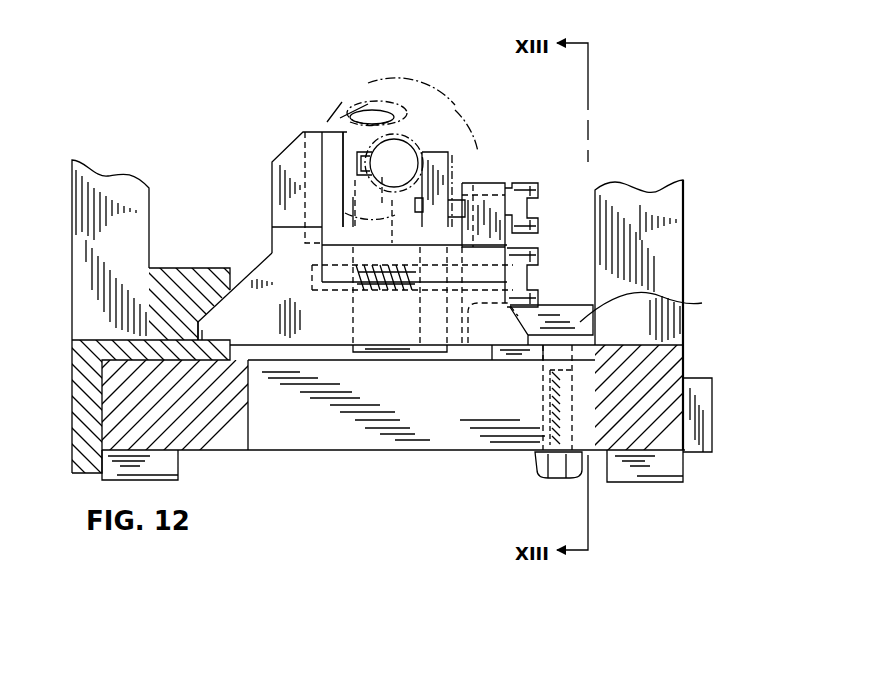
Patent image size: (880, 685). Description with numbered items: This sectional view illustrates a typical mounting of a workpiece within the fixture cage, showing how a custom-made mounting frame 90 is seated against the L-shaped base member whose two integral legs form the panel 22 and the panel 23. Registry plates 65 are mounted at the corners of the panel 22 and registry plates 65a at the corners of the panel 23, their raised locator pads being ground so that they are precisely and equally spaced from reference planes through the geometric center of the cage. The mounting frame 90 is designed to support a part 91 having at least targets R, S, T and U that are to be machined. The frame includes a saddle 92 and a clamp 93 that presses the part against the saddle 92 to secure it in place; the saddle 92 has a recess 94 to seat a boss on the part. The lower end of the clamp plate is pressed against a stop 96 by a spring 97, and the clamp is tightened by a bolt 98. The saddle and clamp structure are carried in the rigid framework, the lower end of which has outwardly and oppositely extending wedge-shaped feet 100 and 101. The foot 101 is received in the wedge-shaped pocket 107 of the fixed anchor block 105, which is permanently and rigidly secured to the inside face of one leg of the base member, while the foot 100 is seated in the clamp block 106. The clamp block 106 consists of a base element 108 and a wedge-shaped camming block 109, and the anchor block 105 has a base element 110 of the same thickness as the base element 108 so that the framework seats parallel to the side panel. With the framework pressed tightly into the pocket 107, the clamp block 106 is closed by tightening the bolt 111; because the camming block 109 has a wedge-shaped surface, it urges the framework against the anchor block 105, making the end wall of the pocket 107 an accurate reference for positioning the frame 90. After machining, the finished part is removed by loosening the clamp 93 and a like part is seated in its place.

The panel 22 is at (364, 454).
The panel 23 is at (688, 239).
The registry plate 65 is at (681, 468).
The registry plate 65a is at (714, 388).
The mounting frame 90 is at (256, 254).
The part 91 is at (367, 81).
The saddle 92 is at (273, 193).
The clamp 93 is at (495, 183).
The recess 94 is at (348, 170).
The stop 96 is at (445, 349).
The spring 97 is at (370, 297).
The bolt 98 is at (522, 183).
The wedge-shaped foot 100 is at (480, 328).
The wedge-shaped foot 101 is at (212, 331).
The anchor block 105 is at (158, 267).
The clamp block 106 is at (574, 296).
The wedge-shaped pocket 107 is at (193, 332).
The base element 108 is at (528, 361).
The wedge-shaped camming block 109 is at (660, 306).
The base element 110 is at (232, 344).
The bolt 111 is at (537, 472).
The target S is at (375, 108).
The target T is at (362, 148).
The target U is at (452, 106).
The target R is at (470, 137).